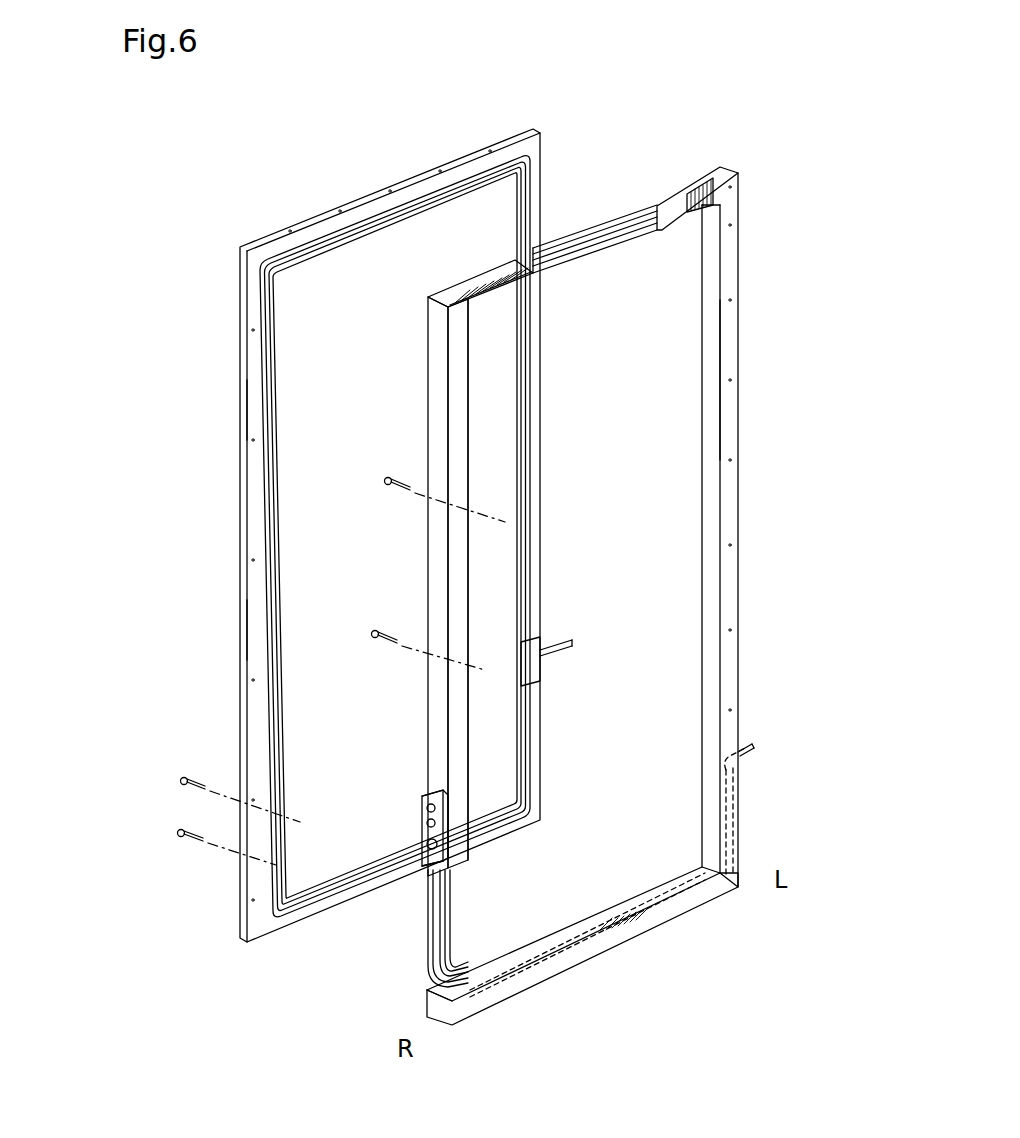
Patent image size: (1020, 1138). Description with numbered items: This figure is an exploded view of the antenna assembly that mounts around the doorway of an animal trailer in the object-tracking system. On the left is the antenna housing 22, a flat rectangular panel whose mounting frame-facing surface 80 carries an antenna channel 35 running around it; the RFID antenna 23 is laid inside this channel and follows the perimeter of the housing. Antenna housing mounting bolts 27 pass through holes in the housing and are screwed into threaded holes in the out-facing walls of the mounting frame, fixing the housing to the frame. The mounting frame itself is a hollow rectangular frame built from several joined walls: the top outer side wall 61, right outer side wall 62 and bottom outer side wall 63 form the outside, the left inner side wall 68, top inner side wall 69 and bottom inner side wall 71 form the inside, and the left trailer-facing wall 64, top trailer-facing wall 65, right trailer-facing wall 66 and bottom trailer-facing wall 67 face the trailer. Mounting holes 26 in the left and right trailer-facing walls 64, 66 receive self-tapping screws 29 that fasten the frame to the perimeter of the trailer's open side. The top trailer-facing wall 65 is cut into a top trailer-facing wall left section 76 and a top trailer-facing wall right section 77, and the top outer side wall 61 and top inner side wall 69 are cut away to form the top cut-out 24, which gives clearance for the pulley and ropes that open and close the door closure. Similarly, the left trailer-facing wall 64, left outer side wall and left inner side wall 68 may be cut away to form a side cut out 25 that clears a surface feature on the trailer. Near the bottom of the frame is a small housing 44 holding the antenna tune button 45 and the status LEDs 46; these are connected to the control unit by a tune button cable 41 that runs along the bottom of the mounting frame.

The antenna housing 22 is at (248, 250).
The RFID antenna 23 is at (250, 284).
The top cut-out 24 is at (620, 205).
The side cut out 25 is at (430, 966).
The mounting holes 26 is at (733, 385).
The antenna housing mounting bolts 27 is at (183, 781).
The self-tapping screws 29 is at (374, 632).
The antenna channel 35 is at (258, 406).
The tune button cable 41 is at (728, 808).
The housing 44 is at (420, 838).
The antenna tune button 45 is at (420, 856).
The status LEDs 46 is at (424, 798).
The top outer side wall 61 is at (466, 270).
The right outer side wall 62 is at (440, 335).
The bottom outer side wall 63 is at (527, 988).
The left trailer-facing wall 64 is at (735, 295).
The top trailer-facing wall 65 is at (520, 272).
The top trailer-facing wall left section 76 is at (490, 288).
The right trailer-facing wall 66 is at (458, 432).
The bottom trailer-facing wall 67 is at (650, 930).
The left inner side wall 68 is at (713, 488).
The top inner side wall 69 is at (688, 216).
The bottom inner side wall 71 is at (597, 930).
The top trailer-facing wall right section 77 is at (677, 193).
The mounting frame-facing surface 80 is at (250, 628).